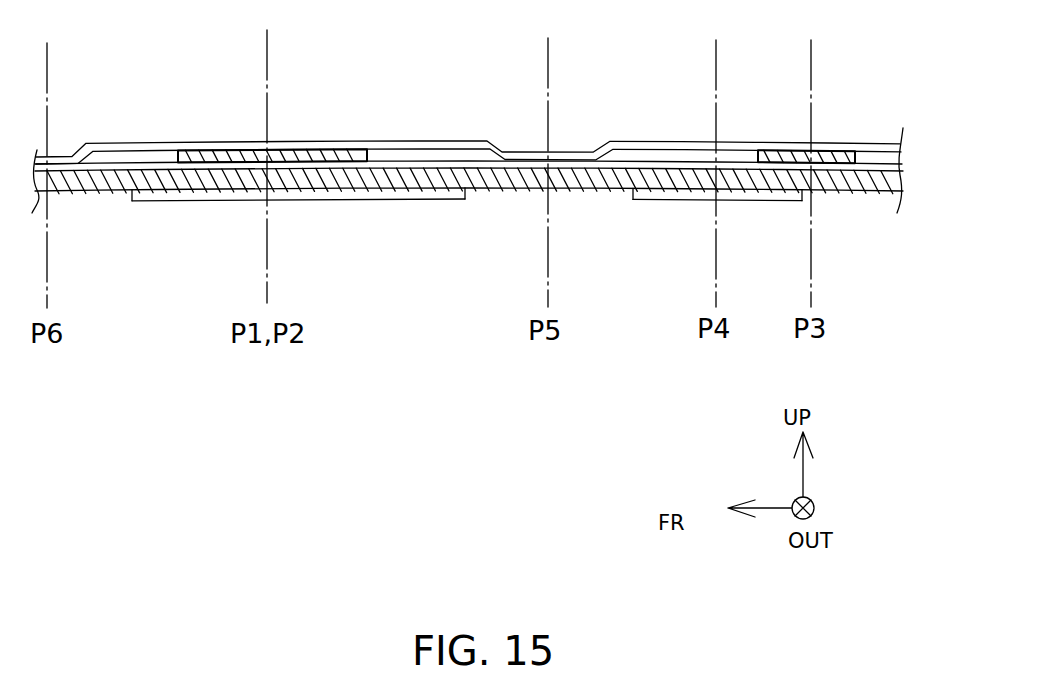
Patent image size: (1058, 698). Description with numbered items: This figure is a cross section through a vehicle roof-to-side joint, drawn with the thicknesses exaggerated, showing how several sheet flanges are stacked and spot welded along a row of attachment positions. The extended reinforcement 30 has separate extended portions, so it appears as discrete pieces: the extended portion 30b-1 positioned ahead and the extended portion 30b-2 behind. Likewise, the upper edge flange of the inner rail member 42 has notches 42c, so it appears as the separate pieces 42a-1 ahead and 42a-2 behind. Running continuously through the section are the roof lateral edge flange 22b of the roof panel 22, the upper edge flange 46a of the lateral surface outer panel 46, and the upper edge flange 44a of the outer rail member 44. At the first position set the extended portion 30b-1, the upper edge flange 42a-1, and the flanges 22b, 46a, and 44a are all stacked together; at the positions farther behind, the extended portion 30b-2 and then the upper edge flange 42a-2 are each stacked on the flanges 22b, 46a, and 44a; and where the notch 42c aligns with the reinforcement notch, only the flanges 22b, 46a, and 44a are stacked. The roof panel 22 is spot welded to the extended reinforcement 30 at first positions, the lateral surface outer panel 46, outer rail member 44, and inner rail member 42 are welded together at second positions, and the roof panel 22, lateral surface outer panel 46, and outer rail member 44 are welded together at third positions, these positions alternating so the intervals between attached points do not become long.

The roof panel 22 is at (468, 101).
The roof lateral edge flange 22b is at (668, 146).
The extended reinforcement 30 is at (519, 82).
The extended portion 30b-1 is at (222, 150).
The extended portion 30b-2 is at (820, 152).
The inner rail member 42 is at (491, 256).
The upper edge flange 42a-1 is at (389, 199).
The upper edge flange 42a-2 is at (680, 198).
The notch 42c is at (130, 201).
The outer rail member 44 is at (495, 225).
The upper edge flange 44a is at (862, 185).
The lateral surface outer panel 46 is at (469, 105).
The upper edge flange 46a is at (415, 163).